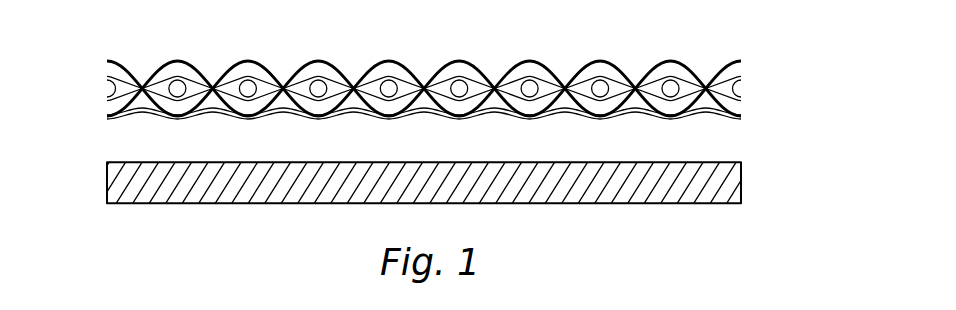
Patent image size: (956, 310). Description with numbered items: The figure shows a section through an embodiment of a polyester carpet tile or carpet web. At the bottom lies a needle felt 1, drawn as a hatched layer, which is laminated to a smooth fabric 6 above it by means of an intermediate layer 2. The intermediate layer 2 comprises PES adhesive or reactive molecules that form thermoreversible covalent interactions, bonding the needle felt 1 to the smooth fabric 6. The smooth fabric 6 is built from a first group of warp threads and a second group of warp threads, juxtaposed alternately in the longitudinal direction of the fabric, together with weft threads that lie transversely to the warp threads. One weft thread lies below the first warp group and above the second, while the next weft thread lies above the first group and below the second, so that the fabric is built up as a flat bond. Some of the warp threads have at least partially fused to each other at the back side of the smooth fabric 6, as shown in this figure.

The needle felt 1 is at (726, 182).
The intermediate layer 2 is at (725, 145).
The smooth fabric 6 is at (447, 61).